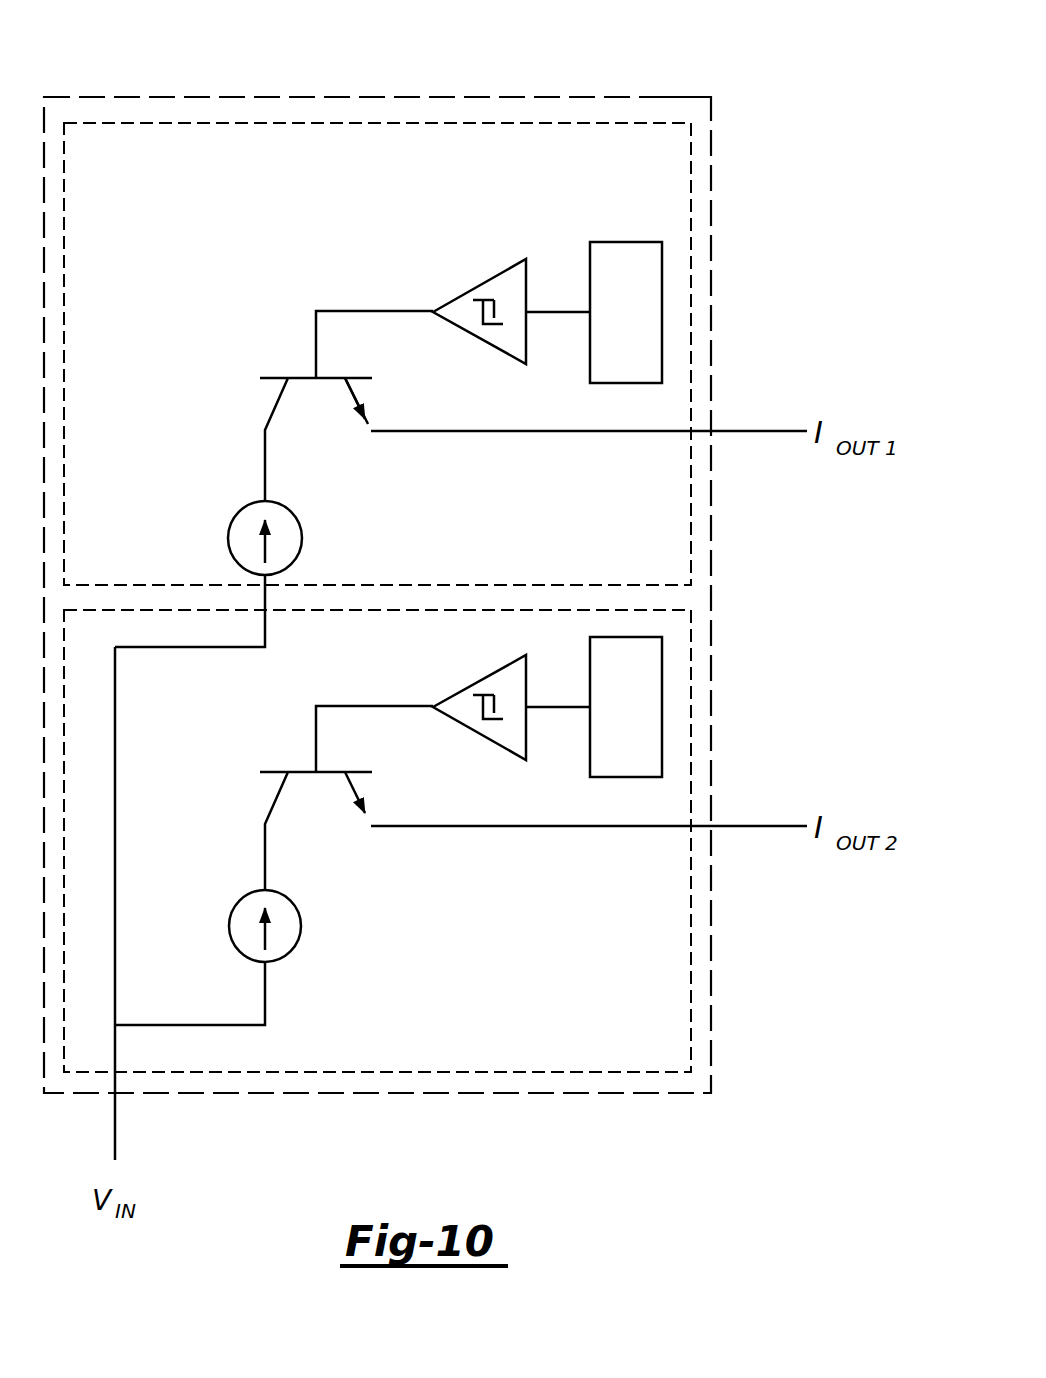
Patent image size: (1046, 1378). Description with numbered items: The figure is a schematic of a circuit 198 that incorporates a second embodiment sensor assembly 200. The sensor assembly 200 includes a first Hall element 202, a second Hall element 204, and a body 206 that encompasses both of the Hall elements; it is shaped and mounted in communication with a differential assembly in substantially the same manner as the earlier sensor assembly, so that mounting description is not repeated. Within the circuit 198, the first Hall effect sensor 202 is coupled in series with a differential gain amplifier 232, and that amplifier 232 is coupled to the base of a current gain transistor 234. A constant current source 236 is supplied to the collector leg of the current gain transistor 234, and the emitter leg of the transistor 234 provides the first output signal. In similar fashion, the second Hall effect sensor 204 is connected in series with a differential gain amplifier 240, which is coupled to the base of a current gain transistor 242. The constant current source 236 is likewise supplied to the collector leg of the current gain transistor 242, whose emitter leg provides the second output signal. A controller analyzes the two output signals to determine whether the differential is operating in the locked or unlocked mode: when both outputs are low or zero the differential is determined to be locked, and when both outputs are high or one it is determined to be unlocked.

The sensor assembly 200 is at (160, 78).
The first Hall element 202 is at (576, 122).
The second Hall element 204 is at (640, 1072).
The body 206 is at (655, 96).
The circuit 198 is at (442, 645).
The differential gain amplifier 232 is at (490, 278).
The current gain transistor 234 is at (296, 362).
The constant current source 236 is at (228, 540).
The differential gain amplifier 240 is at (470, 686).
The current gain transistor 242 is at (295, 757).